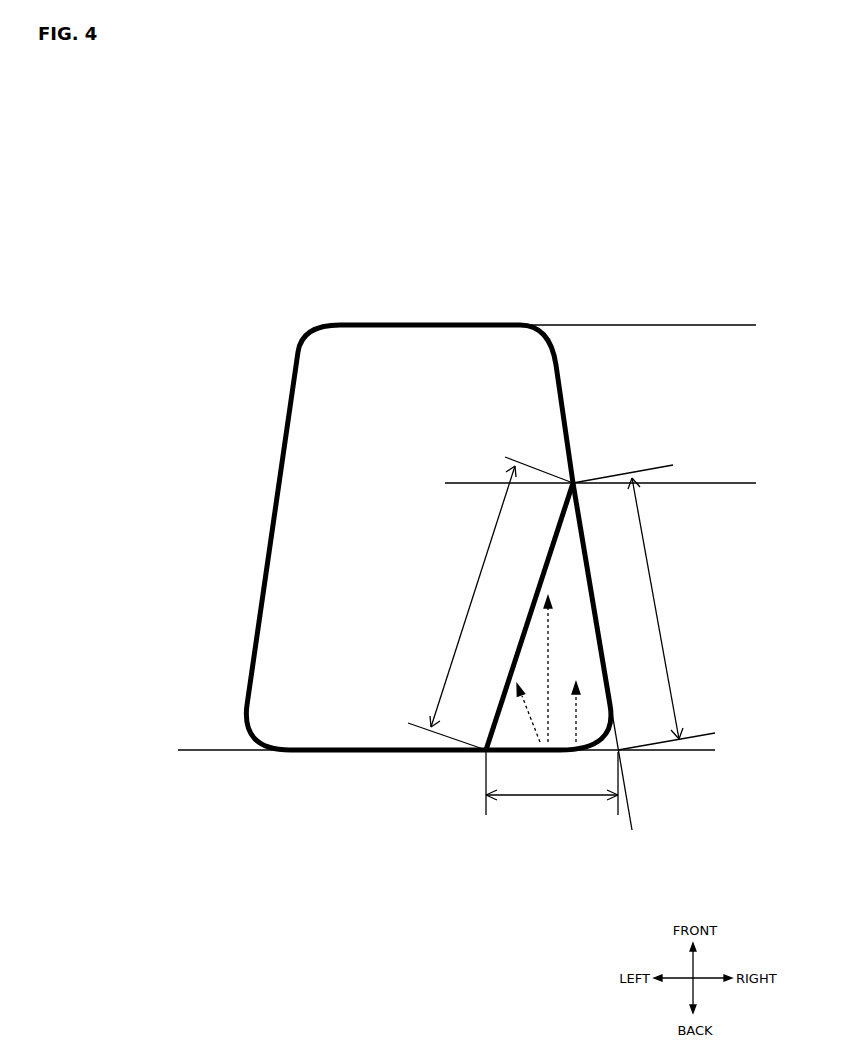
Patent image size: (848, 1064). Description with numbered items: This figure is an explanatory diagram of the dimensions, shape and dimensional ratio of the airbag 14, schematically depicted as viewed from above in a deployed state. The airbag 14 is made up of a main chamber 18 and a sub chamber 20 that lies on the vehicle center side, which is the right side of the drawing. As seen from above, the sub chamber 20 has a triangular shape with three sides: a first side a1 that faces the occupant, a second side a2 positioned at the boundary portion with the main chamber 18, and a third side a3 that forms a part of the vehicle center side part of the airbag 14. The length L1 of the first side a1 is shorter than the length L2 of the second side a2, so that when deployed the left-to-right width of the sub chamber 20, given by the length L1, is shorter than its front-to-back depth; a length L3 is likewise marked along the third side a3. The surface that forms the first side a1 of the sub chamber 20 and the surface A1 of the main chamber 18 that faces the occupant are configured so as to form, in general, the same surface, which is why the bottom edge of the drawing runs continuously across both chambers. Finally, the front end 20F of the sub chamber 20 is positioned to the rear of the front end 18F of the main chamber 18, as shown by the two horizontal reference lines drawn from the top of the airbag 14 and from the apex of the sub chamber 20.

The airbag 14 is at (295, 316).
The main chamber 18 is at (294, 463).
The front end of the main chamber 18F is at (654, 325).
The sub chamber 20 is at (580, 561).
The front end of the sub chamber 20F is at (616, 483).
The surface of the main chamber facing the occupant A1 is at (328, 753).
The length of the first side L1 is at (552, 787).
The length of the second side L2 is at (490, 603).
The length of the third side L3 is at (644, 607).
The first side a1 is at (507, 753).
The second side a2 is at (542, 568).
The third side a3 is at (612, 672).